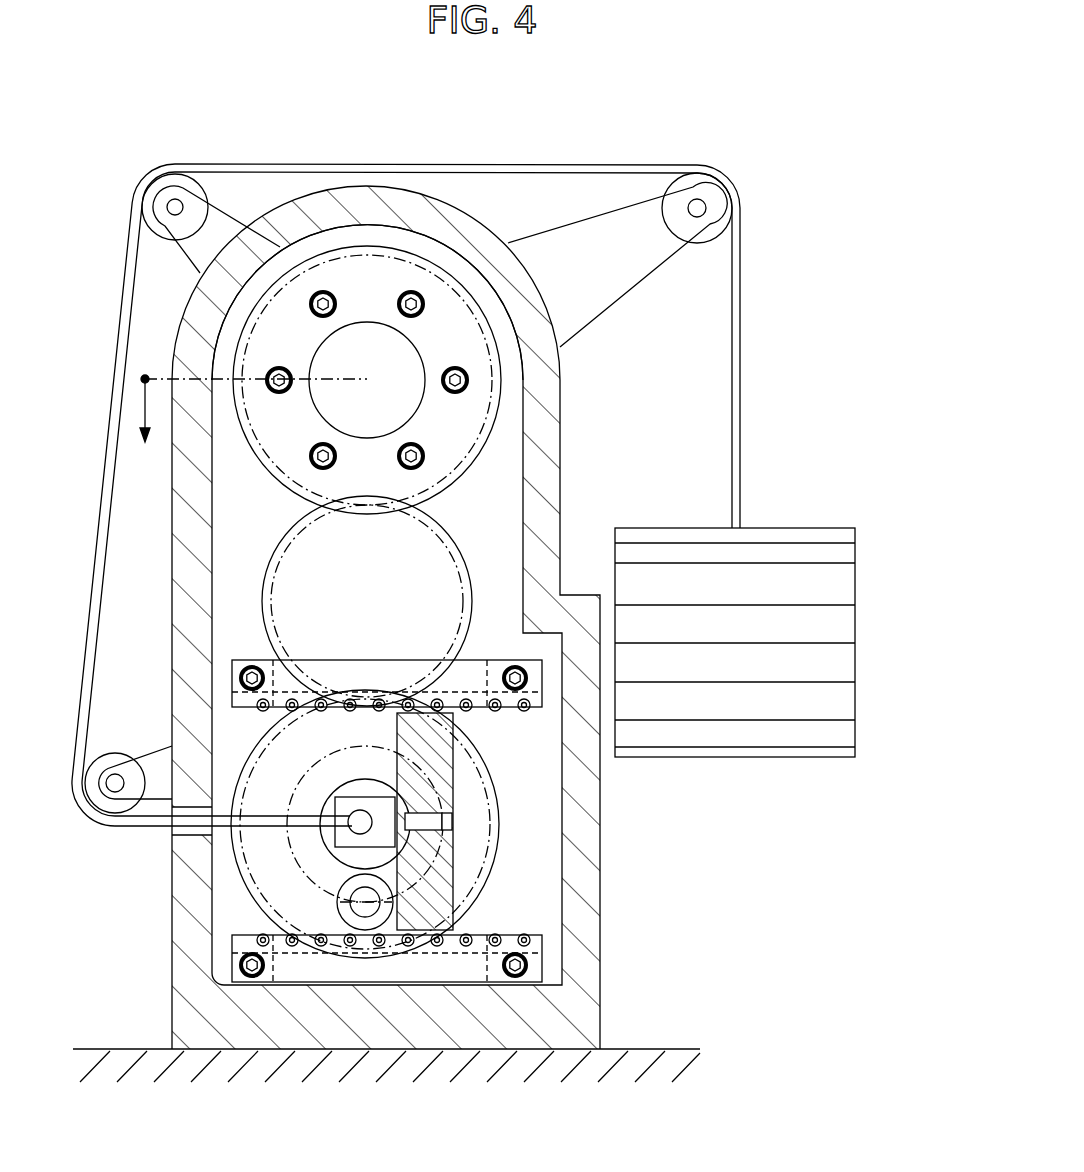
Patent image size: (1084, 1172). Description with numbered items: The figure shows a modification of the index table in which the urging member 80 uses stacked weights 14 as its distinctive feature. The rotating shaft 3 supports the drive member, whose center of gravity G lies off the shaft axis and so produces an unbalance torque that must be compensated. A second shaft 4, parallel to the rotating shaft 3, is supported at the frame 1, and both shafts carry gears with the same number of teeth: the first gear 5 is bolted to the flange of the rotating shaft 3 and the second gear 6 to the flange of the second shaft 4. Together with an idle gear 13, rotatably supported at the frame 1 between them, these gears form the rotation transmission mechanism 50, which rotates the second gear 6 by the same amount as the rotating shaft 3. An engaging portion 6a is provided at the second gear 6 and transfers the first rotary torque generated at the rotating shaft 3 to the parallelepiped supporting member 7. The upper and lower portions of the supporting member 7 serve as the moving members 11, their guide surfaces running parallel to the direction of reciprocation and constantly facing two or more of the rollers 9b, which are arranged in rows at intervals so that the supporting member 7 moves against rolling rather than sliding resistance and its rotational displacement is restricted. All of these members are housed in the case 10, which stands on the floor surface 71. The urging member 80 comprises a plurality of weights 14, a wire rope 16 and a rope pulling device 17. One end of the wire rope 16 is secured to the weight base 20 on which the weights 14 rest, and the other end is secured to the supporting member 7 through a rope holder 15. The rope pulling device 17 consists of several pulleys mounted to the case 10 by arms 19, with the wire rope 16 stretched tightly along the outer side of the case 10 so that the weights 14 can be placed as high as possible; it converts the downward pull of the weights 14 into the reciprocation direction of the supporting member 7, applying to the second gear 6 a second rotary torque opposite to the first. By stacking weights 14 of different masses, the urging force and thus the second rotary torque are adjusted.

The frame 1 is at (533, 840).
The rotating shaft 3 is at (308, 346).
The second shaft 4 is at (318, 790).
The first gear 5 is at (293, 473).
The second gear 6 is at (260, 738).
The engaging portion 6a is at (345, 926).
The supporting member 7 is at (453, 782).
The rollers 9b is at (483, 947).
The case 10 is at (498, 275).
The moving members 11 is at (437, 732).
The idle gear 13 is at (265, 568).
The weights 14 is at (848, 591).
The rope holder 15 is at (335, 845).
The wire rope 16 is at (740, 338).
The rope pulling device 17 is at (755, 180).
The arm 19 is at (637, 205).
The weight base 20 is at (850, 750).
The rotation transmission mechanism 50 is at (148, 487).
The ground 71 is at (690, 1049).
The urging member 80 is at (834, 506).
The center of gravity G is at (141, 376).